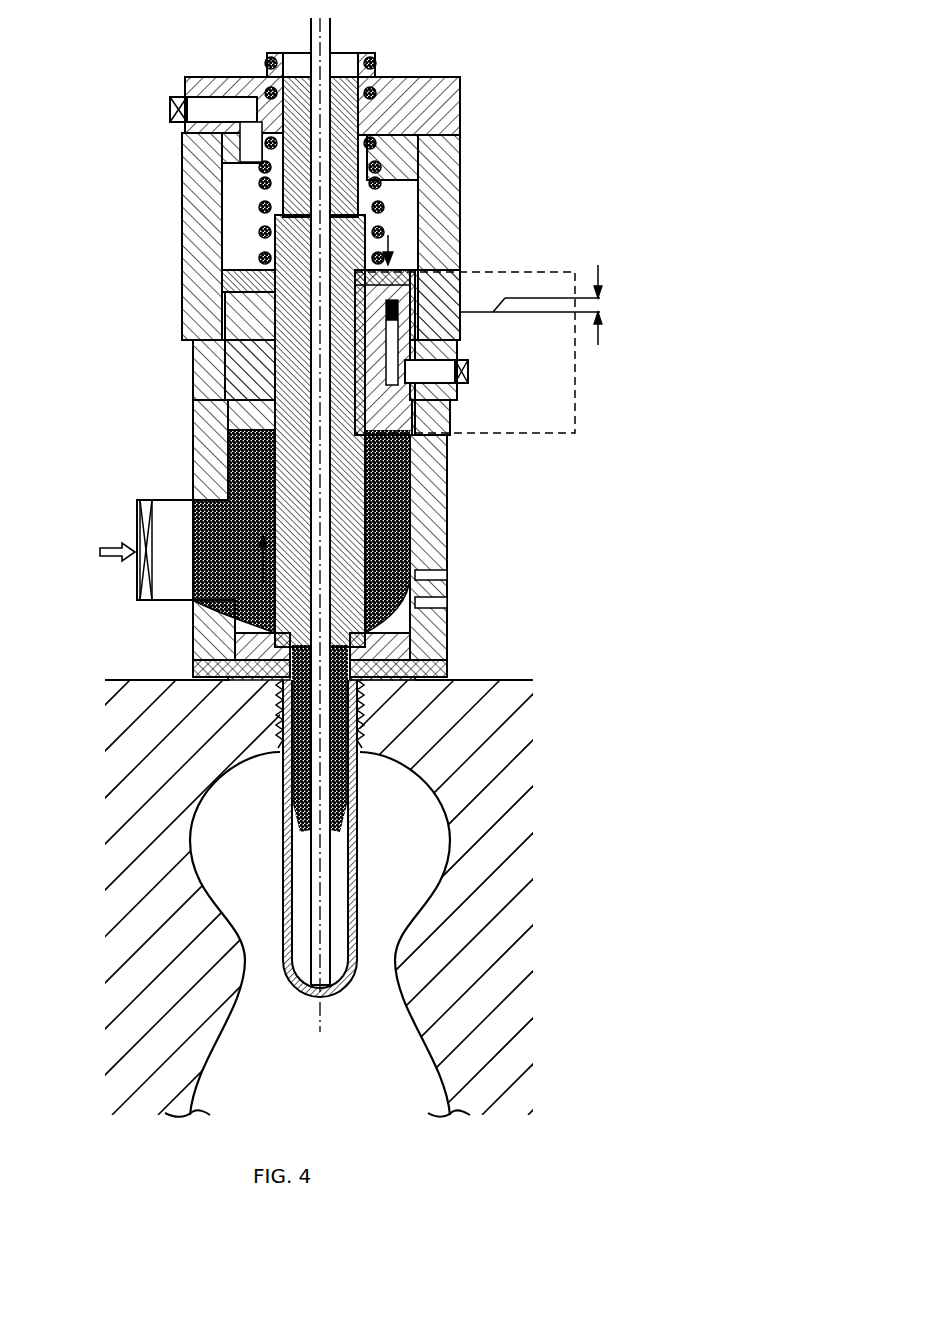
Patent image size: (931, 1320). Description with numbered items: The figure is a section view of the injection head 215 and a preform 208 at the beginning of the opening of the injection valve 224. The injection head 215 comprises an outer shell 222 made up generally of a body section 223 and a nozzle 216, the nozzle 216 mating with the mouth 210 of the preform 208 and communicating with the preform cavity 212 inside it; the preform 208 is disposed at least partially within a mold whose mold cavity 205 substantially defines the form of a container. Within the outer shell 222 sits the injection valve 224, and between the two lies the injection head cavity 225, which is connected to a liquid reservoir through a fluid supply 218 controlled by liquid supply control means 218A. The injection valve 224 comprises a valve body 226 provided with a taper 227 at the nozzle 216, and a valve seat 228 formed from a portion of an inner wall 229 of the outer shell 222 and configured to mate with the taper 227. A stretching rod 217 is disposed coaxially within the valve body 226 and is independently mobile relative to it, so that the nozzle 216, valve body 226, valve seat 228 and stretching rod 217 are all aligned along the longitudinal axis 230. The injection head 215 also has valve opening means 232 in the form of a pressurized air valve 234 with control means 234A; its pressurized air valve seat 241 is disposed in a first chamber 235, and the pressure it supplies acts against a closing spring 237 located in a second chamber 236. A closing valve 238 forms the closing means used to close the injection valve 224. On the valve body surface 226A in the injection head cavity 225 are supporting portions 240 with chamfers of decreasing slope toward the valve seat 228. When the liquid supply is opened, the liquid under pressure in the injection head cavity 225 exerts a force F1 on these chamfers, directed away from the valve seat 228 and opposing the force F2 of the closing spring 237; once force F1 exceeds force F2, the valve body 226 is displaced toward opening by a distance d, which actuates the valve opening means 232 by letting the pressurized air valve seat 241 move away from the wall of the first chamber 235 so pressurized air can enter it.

The mold cavity 205 is at (435, 850).
The preform 208 is at (283, 907).
The mouth 210 is at (270, 685).
The preform cavity 212 is at (305, 827).
The injection head 215 is at (490, 62).
The nozzle 216 is at (235, 645).
The stretching rod 217 is at (315, 67).
The fluid supply 218 is at (175, 510).
The liquid supply control means 218A is at (137, 582).
The outer shell 222 is at (182, 182).
The body section 223 is at (185, 337).
The injection valve 224 is at (375, 500).
The injection head cavity 225 is at (392, 538).
The valve body 226 is at (368, 470).
The valve body surface 226A is at (238, 433).
The taper 227 is at (440, 634).
The valve seat 228 is at (402, 682).
The inner wall 229 is at (447, 603).
The longitudinal axis 230 is at (320, 1020).
The valve opening means 232 is at (575, 433).
The pressurized air valve 234 is at (465, 364).
The control means 234A is at (468, 373).
The first chamber 235 is at (218, 297).
The second chamber 236 is at (228, 247).
The closing spring 237 is at (395, 205).
The closing valve 238 is at (178, 110).
The supporting portions 240 is at (270, 517).
The pressurized air valve seat 241 is at (400, 295).
The force F1 is at (249, 559).
The force of the closing spring F2 is at (390, 234).
The distance d is at (538, 305).